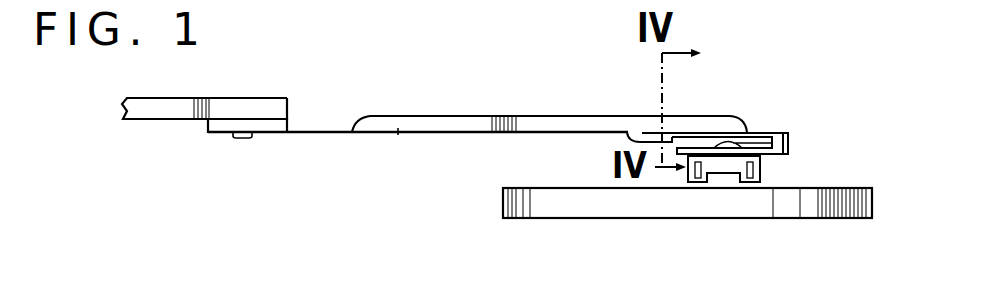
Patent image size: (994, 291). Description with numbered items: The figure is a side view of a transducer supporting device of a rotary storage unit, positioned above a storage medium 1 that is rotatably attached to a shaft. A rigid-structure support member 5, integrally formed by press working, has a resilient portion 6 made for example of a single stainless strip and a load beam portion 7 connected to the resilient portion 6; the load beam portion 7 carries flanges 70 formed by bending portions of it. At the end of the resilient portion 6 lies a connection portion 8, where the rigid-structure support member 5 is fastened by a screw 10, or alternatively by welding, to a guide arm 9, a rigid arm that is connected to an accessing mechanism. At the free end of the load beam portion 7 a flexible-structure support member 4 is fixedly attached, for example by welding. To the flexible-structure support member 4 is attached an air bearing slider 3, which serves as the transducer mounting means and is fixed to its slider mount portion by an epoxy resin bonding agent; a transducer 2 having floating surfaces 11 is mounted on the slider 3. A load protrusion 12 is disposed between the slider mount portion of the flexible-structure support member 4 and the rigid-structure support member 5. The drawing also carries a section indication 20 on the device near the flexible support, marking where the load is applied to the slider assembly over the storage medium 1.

The storage medium 1 is at (503, 204).
The transducer 2 is at (760, 172).
The air bearing slider 3 is at (687, 174).
The flexible-structure support member 4 is at (791, 120).
The rigid-structure support member 5 is at (475, 108).
The resilient portion 6 is at (330, 134).
The load beam portion 7 is at (398, 135).
The connection portion 8 is at (210, 134).
The guide arm 9 is at (218, 106).
The screw 10 is at (242, 140).
The floating surfaces 11 is at (699, 183).
The load protrusion 12 is at (757, 132).
The hook portion 20 is at (626, 134).
The flanges 70 is at (416, 126).